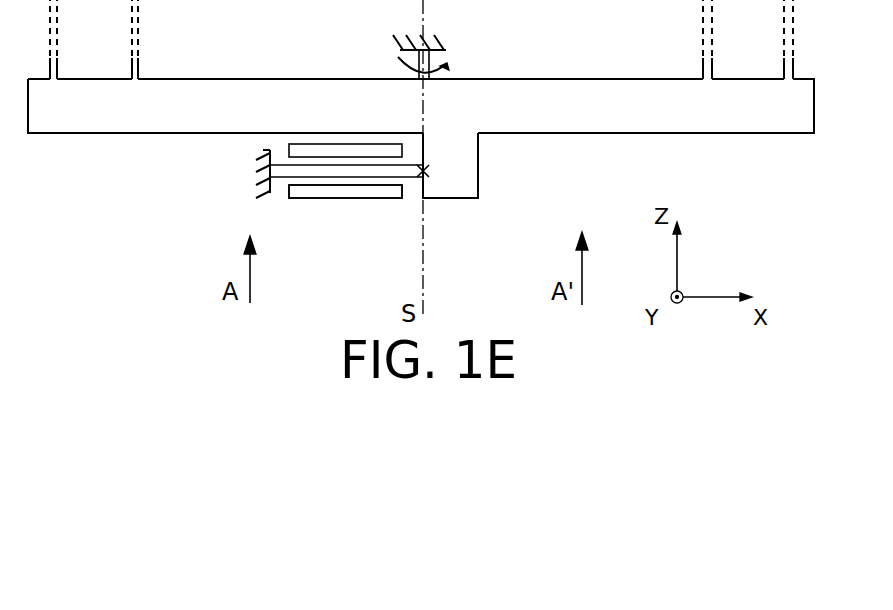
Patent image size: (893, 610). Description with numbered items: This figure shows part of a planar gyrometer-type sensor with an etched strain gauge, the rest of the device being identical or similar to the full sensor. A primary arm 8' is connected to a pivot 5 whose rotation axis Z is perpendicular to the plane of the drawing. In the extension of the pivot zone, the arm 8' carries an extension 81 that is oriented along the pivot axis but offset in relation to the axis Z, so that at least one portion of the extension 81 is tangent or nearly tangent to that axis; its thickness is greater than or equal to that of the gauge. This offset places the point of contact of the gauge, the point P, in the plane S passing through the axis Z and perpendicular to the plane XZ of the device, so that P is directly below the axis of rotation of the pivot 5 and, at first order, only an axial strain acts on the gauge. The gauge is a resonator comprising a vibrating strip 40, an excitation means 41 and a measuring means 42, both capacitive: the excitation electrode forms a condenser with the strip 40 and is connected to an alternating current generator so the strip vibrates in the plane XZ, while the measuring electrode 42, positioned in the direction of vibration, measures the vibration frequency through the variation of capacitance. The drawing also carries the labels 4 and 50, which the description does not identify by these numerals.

The movable structure / actuator assembly 4 is at (368, 203).
The pivot 5 is at (438, 60).
The primary arm 8' is at (421, 102).
The vibrating strip 40 is at (322, 172).
The excitation means 41 is at (345, 148).
The measuring means 42 is at (337, 198).
The fixed anchor 50 is at (266, 164).
The extension 81 is at (445, 190).
The point P is at (430, 172).